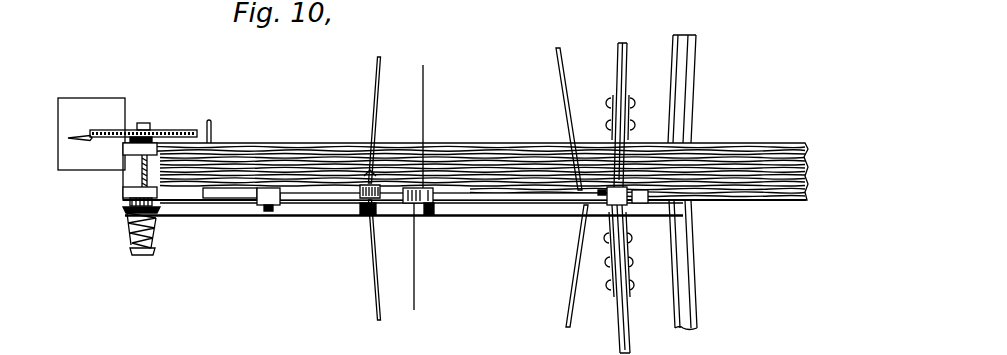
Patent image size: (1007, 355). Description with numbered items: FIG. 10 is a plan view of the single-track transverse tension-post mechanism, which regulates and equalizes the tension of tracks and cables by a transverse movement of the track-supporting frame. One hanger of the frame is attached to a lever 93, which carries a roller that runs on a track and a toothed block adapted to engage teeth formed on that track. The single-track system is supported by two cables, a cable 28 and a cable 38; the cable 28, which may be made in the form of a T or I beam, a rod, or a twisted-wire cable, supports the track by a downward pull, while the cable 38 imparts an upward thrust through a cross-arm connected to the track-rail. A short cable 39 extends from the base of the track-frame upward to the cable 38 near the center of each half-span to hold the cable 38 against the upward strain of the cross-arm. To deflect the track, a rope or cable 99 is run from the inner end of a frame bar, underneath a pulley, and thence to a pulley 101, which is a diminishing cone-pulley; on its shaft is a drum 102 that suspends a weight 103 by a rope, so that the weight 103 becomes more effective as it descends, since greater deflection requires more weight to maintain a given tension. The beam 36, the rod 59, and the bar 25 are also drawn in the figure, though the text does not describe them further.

The beam 36 is at (770, 133).
The box 103 is at (120, 108).
The toothed plate 102 is at (178, 127).
The screw 101 is at (153, 232).
The rail 93 is at (335, 200).
The block 99 is at (270, 218).
The blade 38 is at (377, 78).
The rod 59 is at (425, 123).
The blade 39 is at (570, 94).
The rod 28 is at (617, 48).
The bar 25 is at (694, 105).